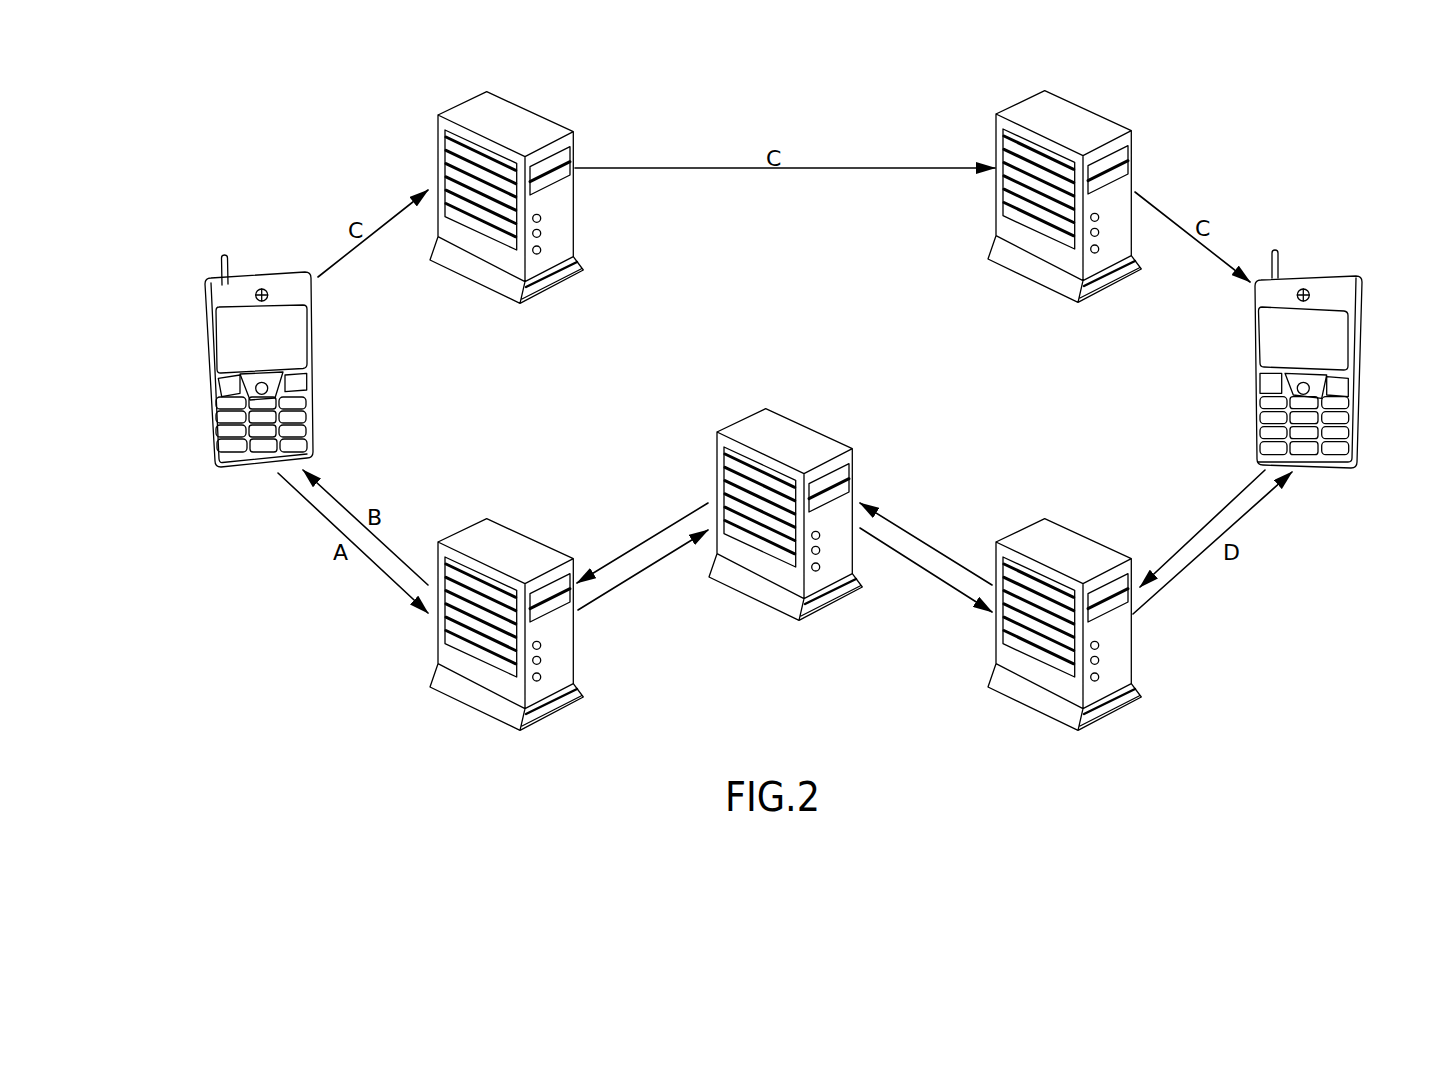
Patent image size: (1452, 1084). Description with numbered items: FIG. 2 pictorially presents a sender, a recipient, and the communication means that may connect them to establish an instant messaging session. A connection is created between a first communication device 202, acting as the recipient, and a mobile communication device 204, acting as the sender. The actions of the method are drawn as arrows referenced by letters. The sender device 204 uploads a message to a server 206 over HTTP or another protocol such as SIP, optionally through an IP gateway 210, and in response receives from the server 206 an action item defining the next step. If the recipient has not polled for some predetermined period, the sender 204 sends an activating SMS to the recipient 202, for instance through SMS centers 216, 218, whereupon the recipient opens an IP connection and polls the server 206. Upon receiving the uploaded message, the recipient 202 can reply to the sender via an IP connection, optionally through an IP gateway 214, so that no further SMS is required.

The first communication device 202 is at (1318, 275).
The mobile communication device 204 is at (273, 270).
The server 206 is at (792, 420).
The IP gateway 210 is at (468, 520).
The IP gateway 214 is at (1075, 548).
The SMS center 216 is at (527, 127).
The SMS center 218 is at (1083, 130).